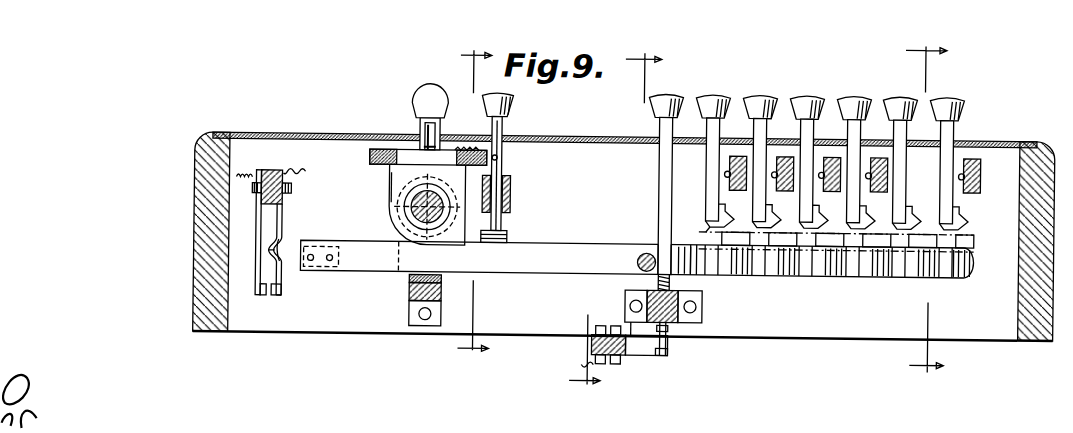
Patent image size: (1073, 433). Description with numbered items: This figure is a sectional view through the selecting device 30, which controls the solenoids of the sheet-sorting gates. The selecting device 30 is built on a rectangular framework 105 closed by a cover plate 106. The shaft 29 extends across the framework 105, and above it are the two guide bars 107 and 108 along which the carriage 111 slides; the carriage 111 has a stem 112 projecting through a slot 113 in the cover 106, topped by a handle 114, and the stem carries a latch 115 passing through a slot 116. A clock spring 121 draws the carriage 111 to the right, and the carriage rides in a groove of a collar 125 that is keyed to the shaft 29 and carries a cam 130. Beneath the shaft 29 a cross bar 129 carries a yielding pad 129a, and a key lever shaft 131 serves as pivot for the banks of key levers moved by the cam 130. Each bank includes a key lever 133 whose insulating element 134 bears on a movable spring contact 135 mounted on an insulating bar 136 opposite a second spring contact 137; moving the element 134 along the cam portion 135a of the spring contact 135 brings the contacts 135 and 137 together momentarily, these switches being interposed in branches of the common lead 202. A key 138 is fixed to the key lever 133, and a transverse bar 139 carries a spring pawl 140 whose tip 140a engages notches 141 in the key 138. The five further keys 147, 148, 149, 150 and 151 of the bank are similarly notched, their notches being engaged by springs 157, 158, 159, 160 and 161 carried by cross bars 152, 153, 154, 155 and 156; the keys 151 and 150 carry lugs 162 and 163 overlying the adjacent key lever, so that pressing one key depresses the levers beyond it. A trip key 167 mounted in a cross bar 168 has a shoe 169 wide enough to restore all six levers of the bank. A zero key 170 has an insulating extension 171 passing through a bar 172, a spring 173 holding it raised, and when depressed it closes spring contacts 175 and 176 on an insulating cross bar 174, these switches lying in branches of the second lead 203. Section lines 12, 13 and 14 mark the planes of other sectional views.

The selecting device 30 is at (205, 130).
The rectangular framework 105 is at (203, 262).
The cover plate 106 is at (263, 168).
The bar of insulating material 136 is at (262, 131).
The spring contact 137 is at (266, 266).
The rounded contact engaging element 134 is at (287, 264).
The movable spring contact 135 is at (281, 238).
The cam portion 135a is at (276, 246).
The common lead 202 is at (237, 175).
The collar 125 is at (404, 228).
The key lever 133 is at (605, 266).
The key lever shaft 131 is at (642, 251).
The cross bar 129 is at (414, 281).
The yielding pad 129a is at (411, 279).
The shaft 29 is at (436, 236).
The cam 130 is at (391, 206).
The latch 115 is at (393, 174).
The carriage 111 is at (381, 140).
The guide bar 107 is at (370, 155).
The clock spring 121 is at (466, 146).
The slot in the cover 113 is at (419, 138).
The stem 112 is at (424, 140).
The slot in the stem 116 is at (428, 146).
The handle 114 is at (455, 78).
The trip key 167 is at (513, 102).
The guide bar 108 is at (499, 155).
The cross bar 168 is at (511, 190).
The shoe 169 is at (508, 235).
The key 138 is at (706, 122).
The "0" key 170 is at (658, 199).
The transverse bar 139 is at (736, 150).
The spring pawl 140 is at (734, 186).
The notches 141 is at (721, 210).
The key 147 is at (761, 92).
The key 148 is at (809, 93).
The key 149 is at (859, 92).
The key 150 is at (897, 90).
The key 151 is at (979, 90).
The cross bar 152 is at (786, 150).
The cross bar 153 is at (831, 150).
The cross bar 154 is at (878, 150).
The cross bar 155 is at (924, 150).
The cross bar 156 is at (980, 152).
The spring 161 is at (958, 201).
The tip of the pawl 140a is at (733, 224).
The spring 157 is at (767, 224).
The spring 158 is at (814, 224).
The spring 159 is at (861, 224).
The spring 160 is at (907, 224).
The lug 163 is at (882, 240).
The lug 162 is at (929, 240).
The spring 173 is at (673, 280).
The bar 172 is at (705, 314).
The reduced extension 171 is at (673, 319).
The spring contact 175 is at (661, 352).
The spring contact 176 is at (635, 328).
The cross bar of insulating material 174 is at (594, 354).
The second lead 203 is at (598, 324).
The section line 12 is at (466, 208).
The section line 13 is at (601, 210).
The section line 14 is at (919, 210).